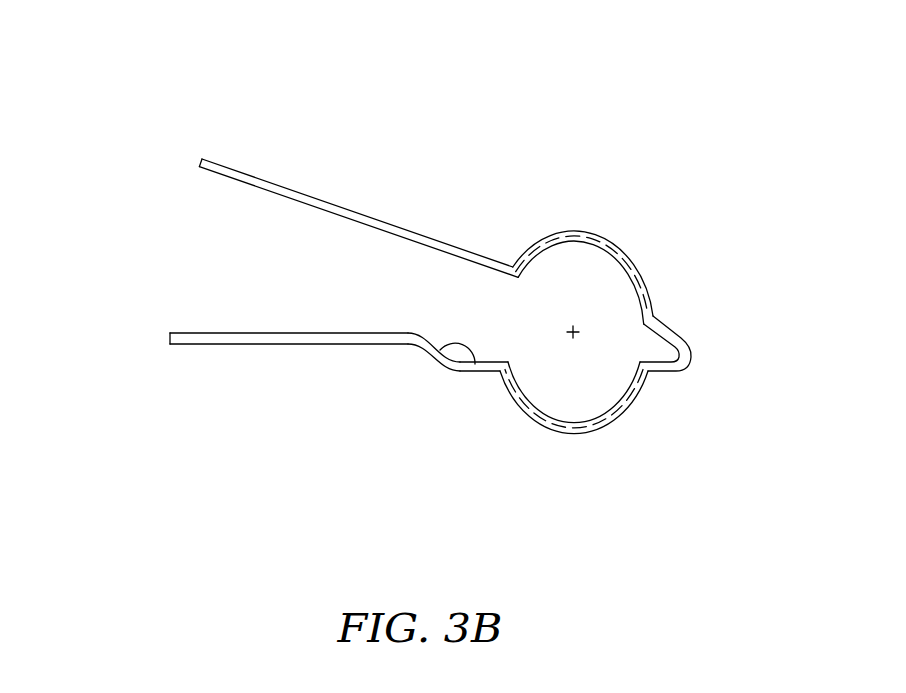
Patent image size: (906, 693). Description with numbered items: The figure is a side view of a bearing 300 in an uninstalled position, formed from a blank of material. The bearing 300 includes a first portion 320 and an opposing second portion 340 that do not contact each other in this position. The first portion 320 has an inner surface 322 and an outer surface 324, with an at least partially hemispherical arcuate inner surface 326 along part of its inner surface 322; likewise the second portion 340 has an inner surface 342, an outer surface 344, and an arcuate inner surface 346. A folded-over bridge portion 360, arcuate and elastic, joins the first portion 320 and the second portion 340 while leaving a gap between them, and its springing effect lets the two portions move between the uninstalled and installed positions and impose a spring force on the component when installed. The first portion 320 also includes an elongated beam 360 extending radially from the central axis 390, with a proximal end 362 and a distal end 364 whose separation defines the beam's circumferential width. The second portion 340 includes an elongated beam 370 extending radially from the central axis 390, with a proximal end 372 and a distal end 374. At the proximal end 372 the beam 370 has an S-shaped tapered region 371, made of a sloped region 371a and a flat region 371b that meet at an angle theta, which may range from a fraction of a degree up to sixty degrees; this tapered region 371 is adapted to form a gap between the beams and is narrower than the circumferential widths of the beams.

The bearing 300 is at (136, 74).
The first portion 320 is at (592, 232).
The inner surface 322 is at (248, 183).
The outer surface 324 is at (373, 218).
The arcuate inner surface 326 is at (624, 271).
The second portion 340 is at (601, 428).
The inner surface 342 is at (243, 333).
The outer surface 344 is at (278, 345).
The arcuate inner surface 346 is at (619, 392).
The folded-over bridge portion 360 is at (283, 187).
The proximal end 362 is at (509, 271).
The distal end 364 is at (201, 160).
The elongated beam 370 is at (367, 345).
The tapered region 371 is at (490, 363).
The sloped region 371a is at (427, 338).
The flat region 371b is at (459, 371).
The proximal end 372 is at (498, 373).
The distal end 374 is at (169, 336).
The central axis 390 is at (575, 330).